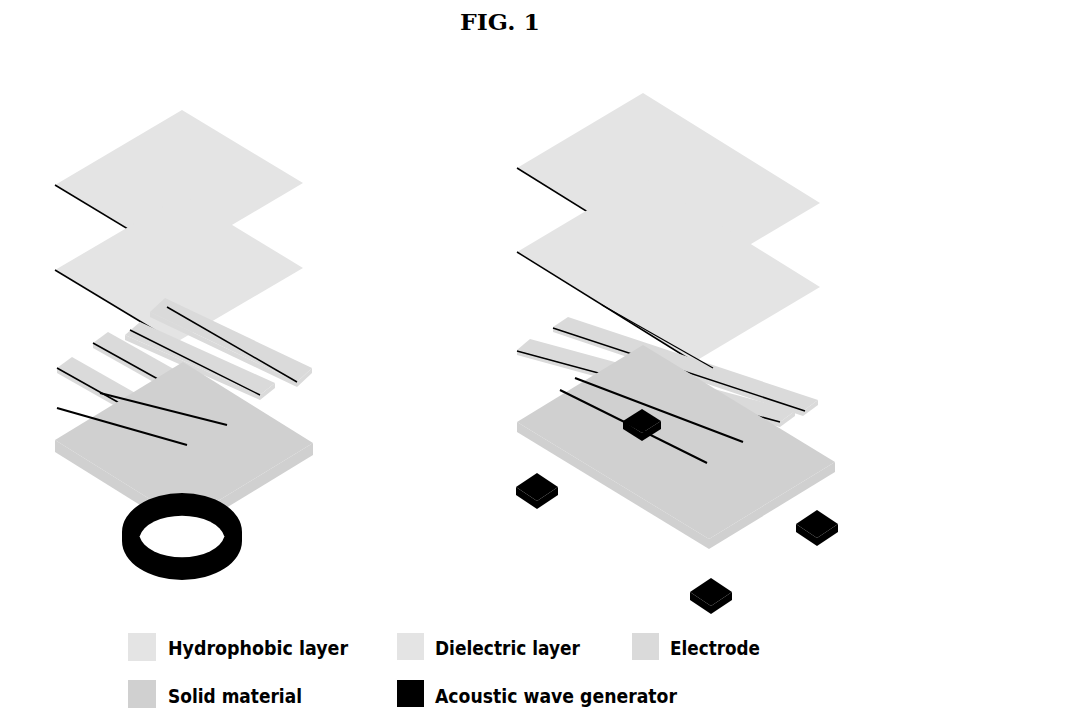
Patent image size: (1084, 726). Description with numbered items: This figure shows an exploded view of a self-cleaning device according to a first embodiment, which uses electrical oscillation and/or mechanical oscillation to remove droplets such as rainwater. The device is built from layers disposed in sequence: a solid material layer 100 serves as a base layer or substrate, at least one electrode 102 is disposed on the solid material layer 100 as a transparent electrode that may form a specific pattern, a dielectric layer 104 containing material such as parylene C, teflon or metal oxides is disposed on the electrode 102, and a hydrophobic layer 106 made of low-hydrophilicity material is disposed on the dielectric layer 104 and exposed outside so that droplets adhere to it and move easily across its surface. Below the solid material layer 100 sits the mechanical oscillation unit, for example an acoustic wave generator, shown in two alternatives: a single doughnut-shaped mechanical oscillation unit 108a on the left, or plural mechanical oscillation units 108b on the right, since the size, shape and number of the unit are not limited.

The solid material layer 100 is at (280, 462).
The electrode 102 is at (822, 390).
The dielectric layer 104 is at (303, 270).
The hydrophobic layer 106 is at (303, 185).
The doughnut-shaped mechanical oscillation unit 108a is at (243, 533).
The plural mechanical oscillation units 108b is at (722, 596).